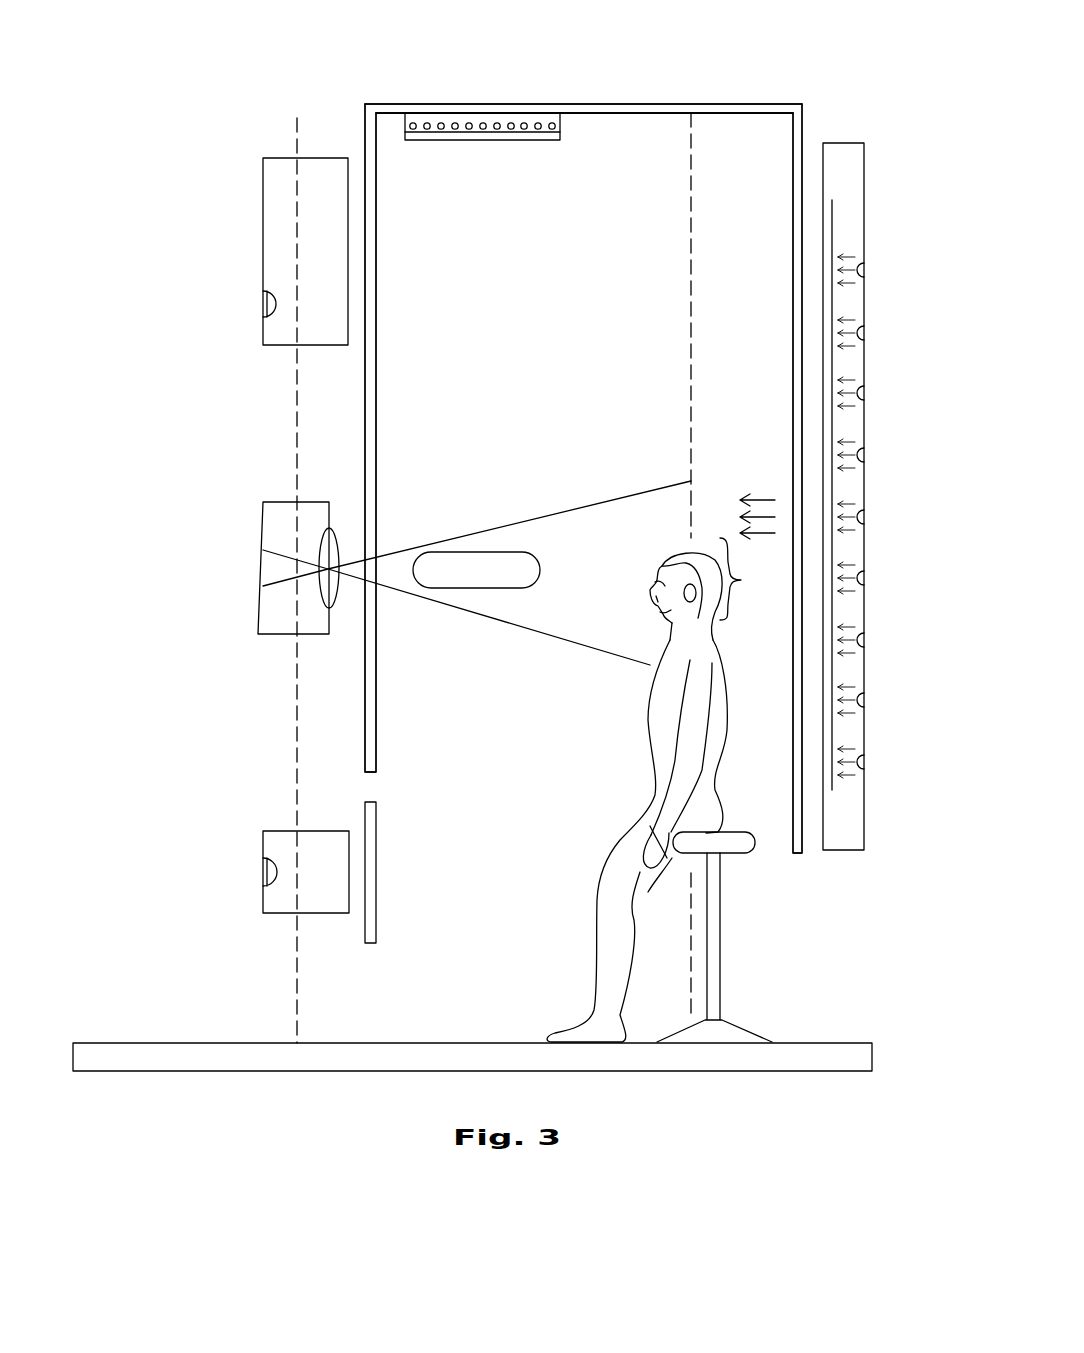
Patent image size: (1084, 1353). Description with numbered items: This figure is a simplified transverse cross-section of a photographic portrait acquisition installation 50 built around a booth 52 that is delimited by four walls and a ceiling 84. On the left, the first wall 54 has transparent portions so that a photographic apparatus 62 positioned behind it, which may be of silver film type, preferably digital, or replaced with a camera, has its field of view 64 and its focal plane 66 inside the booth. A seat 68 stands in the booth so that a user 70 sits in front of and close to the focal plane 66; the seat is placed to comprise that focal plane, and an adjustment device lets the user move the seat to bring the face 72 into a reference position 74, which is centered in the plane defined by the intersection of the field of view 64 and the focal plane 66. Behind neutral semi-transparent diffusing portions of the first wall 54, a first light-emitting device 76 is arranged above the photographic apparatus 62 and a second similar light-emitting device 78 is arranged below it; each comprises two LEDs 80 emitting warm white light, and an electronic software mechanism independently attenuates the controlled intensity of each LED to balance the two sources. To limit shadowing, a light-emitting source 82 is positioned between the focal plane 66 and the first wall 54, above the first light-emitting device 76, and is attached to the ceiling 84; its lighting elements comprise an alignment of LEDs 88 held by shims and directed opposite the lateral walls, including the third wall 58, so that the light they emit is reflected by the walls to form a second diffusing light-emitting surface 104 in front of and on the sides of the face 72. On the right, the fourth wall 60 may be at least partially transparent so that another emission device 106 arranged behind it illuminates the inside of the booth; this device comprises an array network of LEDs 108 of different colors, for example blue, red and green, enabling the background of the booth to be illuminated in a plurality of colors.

The photographic portrait acquisition installation 50 is at (284, 40).
The booth 52 is at (583, 478).
The first wall 54 is at (368, 174).
The third wall 58 is at (668, 128).
The fourth wall 60 is at (796, 131).
The photographic apparatus 62 is at (267, 598).
The field of view 64 is at (477, 573).
The focal plane 66 is at (691, 226).
The seat 68 is at (713, 957).
The user 70 is at (708, 640).
The face 72 is at (653, 582).
The reference position 74 is at (750, 579).
The first light-emitting device 76 is at (270, 241).
The second light-emitting device 78 is at (278, 902).
The LEDs 80 is at (268, 305).
The light-emitting source 82 is at (490, 141).
The ceiling 84 is at (608, 114).
The alignment of LEDs 88 is at (535, 125).
The second diffusing light-emitting surface 104 is at (476, 570).
The emission device 106 is at (853, 818).
The array network of LEDs 108 is at (864, 280).